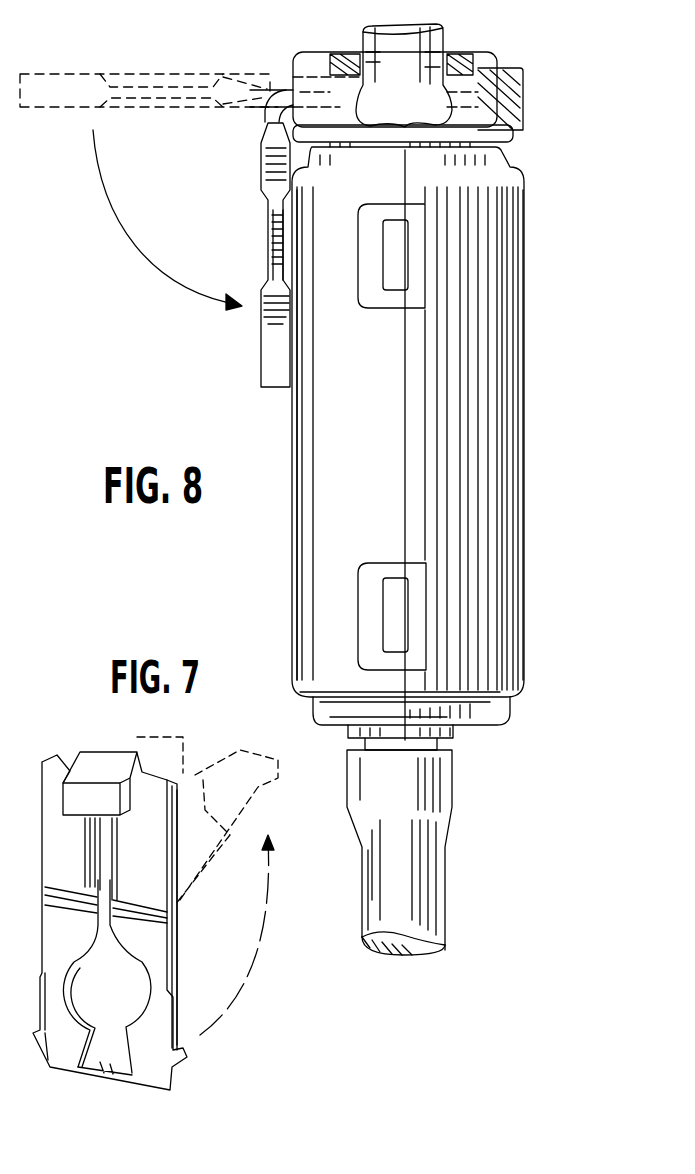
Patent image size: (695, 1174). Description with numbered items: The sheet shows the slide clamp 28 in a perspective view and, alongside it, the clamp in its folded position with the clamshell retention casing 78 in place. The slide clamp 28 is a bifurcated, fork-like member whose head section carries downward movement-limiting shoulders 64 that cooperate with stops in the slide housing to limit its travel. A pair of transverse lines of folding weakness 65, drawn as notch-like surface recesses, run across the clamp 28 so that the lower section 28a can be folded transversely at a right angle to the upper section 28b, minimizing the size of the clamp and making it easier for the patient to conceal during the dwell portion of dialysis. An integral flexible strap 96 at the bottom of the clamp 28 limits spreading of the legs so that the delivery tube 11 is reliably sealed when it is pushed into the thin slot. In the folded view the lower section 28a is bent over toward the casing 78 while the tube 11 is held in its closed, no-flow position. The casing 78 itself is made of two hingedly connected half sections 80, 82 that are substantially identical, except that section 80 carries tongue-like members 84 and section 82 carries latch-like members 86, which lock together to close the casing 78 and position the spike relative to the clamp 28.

In FIG. 8, the delivery tube 11 is at (433, 36).
In FIG. 7, the slide clamp 28 is at (57, 752).
In FIG. 8, the lower section 28a is at (63, 83).
In FIG. 7, the lower section 28a is at (153, 967).
In FIG. 7, the upper section 28b is at (158, 803).
In FIG. 7, the downward movement-limiting shoulders 64 is at (82, 798).
In FIG. 7, the lines of folding weakness 65 is at (55, 890).
In FIG. 8, the clamshell retention casing 78 is at (522, 413).
In FIG. 8, the half section 80 is at (312, 538).
In FIG. 8, the half section 82 is at (480, 523).
In FIG. 8, the tongue-like members 84 is at (393, 257).
In FIG. 8, the latch-like members 86 is at (367, 600).
In FIG. 7, the integral flexible strap 96 is at (108, 1070).